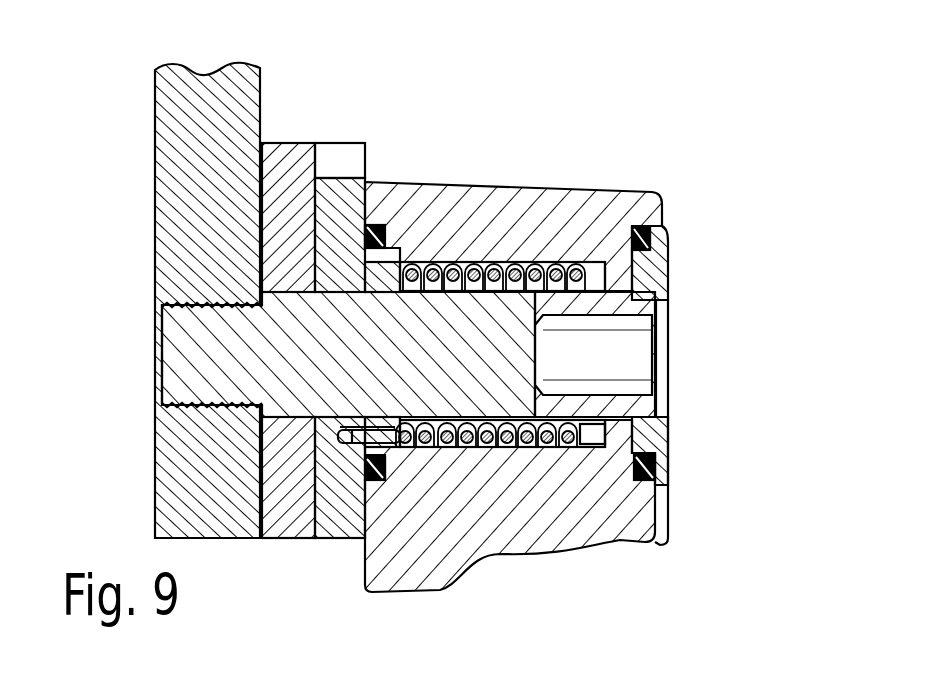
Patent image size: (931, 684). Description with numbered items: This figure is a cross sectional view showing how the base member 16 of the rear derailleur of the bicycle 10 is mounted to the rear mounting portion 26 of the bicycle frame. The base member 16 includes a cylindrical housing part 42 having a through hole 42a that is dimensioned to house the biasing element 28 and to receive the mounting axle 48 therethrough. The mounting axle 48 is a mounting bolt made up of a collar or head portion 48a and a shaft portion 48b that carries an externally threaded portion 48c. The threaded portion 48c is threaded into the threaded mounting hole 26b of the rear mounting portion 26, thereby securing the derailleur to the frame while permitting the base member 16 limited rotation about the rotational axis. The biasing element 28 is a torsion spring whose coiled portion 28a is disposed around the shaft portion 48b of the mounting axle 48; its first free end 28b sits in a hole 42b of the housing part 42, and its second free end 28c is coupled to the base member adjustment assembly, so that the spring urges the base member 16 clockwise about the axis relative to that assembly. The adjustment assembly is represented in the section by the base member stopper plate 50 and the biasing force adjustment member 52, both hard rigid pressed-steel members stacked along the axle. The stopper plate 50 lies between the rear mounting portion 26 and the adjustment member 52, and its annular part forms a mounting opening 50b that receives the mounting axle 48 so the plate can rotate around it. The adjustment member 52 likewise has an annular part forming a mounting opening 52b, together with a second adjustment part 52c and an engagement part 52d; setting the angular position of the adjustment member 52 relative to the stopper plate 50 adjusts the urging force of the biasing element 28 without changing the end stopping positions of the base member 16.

The bicycle 10 is at (432, 140).
The base member 16 is at (581, 339).
The rear mounting portion 26 is at (140, 300).
The threaded mounting hole 26b is at (165, 392).
The biasing element 28 is at (507, 255).
The coiled portion 28a is at (452, 525).
The first free end 28b is at (620, 450).
The second free end 28c is at (425, 445).
The cylindrical housing part 42 is at (576, 339).
The through hole 42a is at (611, 310).
The hole 42b is at (607, 440).
The mounting axle 48 is at (714, 382).
The head portion 48a is at (665, 445).
The shaft portion 48b is at (300, 415).
The externally threaded portion 48c is at (178, 275).
The base member stopper plate 50 is at (296, 282).
The mounting opening 50b is at (170, 332).
The biasing force adjustment member 52 is at (293, 341).
The mounting opening 52b is at (362, 300).
The second adjustment part 52c is at (338, 150).
The engagement part 52d is at (338, 515).